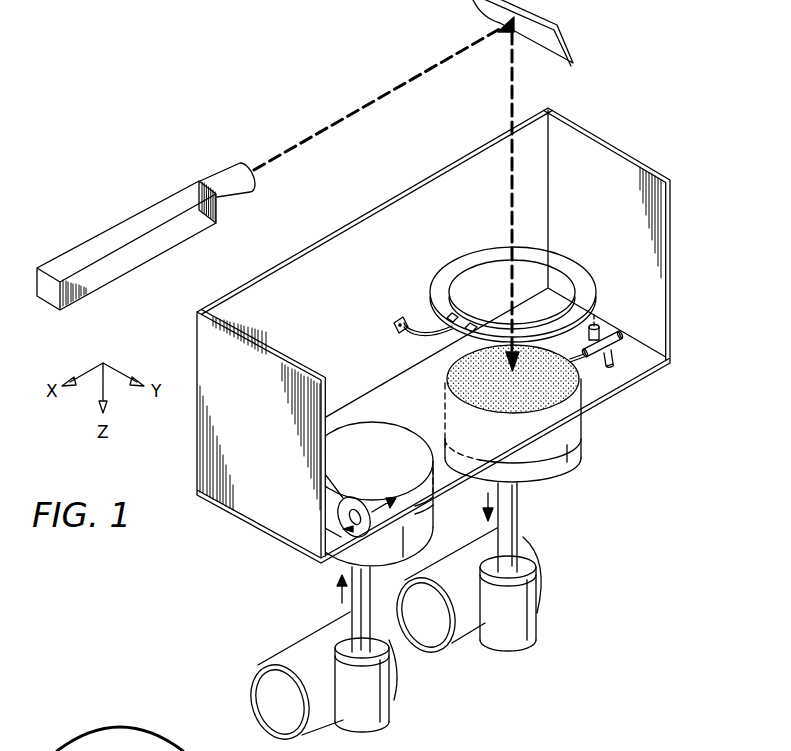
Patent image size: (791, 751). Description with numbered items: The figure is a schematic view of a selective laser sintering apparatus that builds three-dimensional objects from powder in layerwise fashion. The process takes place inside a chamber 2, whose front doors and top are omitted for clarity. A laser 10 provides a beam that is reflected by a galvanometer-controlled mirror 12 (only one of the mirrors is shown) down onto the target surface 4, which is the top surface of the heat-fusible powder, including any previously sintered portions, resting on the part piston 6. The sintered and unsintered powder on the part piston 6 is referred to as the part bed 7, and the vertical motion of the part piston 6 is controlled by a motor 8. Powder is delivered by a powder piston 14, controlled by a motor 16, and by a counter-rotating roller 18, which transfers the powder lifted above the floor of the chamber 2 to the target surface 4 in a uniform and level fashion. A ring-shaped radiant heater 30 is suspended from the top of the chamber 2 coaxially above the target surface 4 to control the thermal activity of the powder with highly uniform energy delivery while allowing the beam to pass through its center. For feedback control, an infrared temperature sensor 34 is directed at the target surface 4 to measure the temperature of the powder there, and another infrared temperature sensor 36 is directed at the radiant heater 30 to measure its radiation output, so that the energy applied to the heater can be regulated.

The chamber 2 is at (633, 160).
The target surface 4 is at (446, 373).
The part piston 6 is at (580, 452).
The part bed 7 is at (433, 403).
The rotation motor 8 is at (537, 610).
The laser 10 is at (110, 232).
The galvanometer-controlled mirror 12 is at (568, 45).
The powder piston 14 is at (340, 563).
The motor 16 is at (388, 700).
The counter-rotating roller 18 is at (344, 495).
The radiant heater 30 is at (448, 270).
The infrared temperature sensor 34 is at (627, 345).
The infrared temperature sensor 36 is at (596, 328).